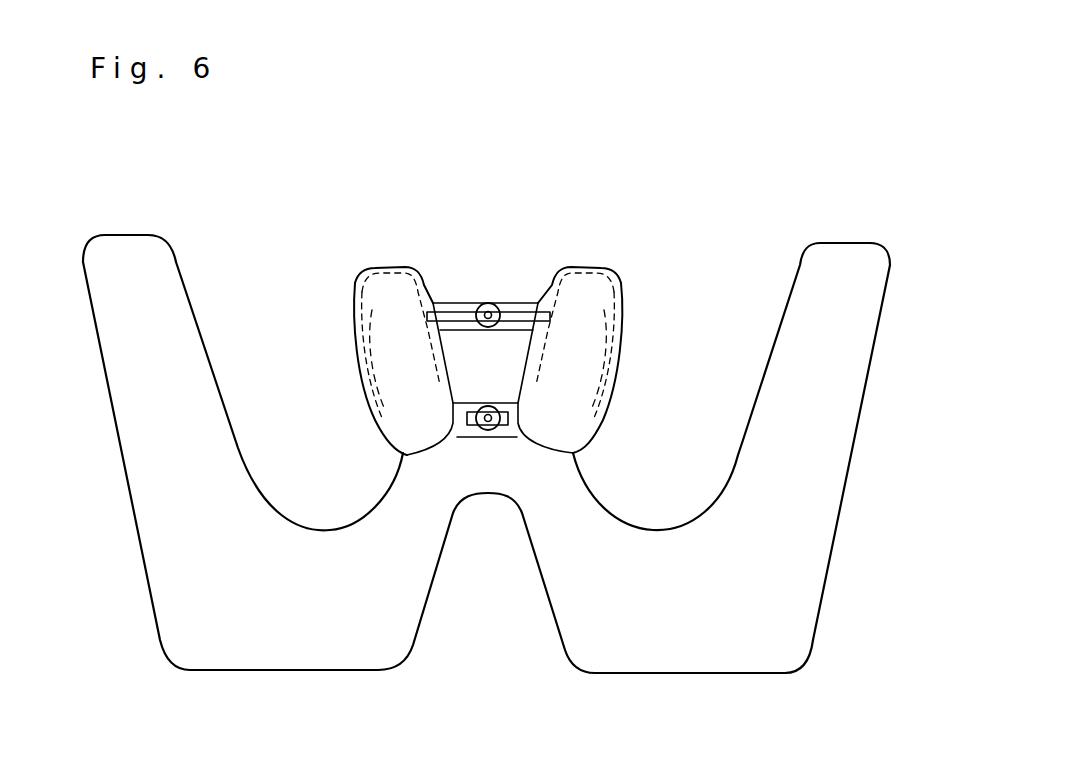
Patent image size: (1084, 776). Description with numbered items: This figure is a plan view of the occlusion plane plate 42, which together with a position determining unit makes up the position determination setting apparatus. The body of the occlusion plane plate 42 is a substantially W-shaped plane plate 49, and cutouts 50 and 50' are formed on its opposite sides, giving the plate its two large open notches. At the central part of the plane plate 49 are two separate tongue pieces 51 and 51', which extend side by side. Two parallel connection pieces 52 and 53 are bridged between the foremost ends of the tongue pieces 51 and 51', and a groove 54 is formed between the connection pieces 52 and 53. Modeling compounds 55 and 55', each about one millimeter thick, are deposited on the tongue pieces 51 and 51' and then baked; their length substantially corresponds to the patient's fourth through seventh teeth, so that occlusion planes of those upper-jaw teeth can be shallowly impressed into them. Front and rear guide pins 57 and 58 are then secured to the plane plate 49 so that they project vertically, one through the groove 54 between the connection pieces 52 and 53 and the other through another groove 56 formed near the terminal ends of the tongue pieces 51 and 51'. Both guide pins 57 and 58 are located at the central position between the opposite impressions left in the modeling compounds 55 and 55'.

The occlusion plane plate 42 is at (865, 393).
The plane plate 49 is at (627, 658).
The cutout 50 is at (681, 398).
The cutout 50' is at (264, 348).
The tongue piece 51 is at (579, 332).
The tongue piece 51' is at (385, 338).
The connection piece 52 is at (520, 302).
The connection piece 53 is at (455, 302).
The groove 54 is at (467, 310).
The modeling compound 55 is at (632, 260).
The modeling compound 55' is at (334, 310).
The groove 56 is at (480, 407).
The guide pin 57 is at (488, 415).
The guide pin 58 is at (489, 312).